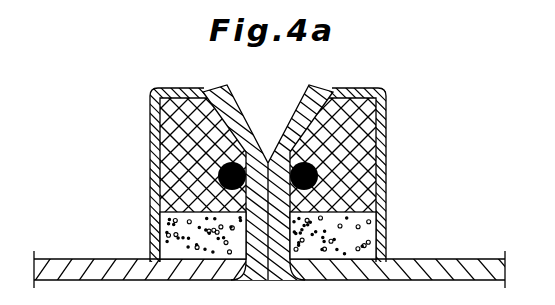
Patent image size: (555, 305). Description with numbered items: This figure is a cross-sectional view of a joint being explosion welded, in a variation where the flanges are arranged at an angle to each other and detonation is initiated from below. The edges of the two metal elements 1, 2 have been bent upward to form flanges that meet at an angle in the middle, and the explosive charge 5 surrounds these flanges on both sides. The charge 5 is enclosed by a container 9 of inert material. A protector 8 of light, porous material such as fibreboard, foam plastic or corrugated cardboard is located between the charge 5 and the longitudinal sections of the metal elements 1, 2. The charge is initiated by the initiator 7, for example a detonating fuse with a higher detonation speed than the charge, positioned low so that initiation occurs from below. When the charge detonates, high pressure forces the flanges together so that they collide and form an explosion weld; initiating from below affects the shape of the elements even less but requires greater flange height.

The metal element 1 is at (458, 272).
The metal element 2 is at (88, 268).
The explosive charge 5 is at (173, 140).
The initiator 7 is at (218, 181).
The protector 8 is at (167, 236).
The container 9 is at (183, 97).